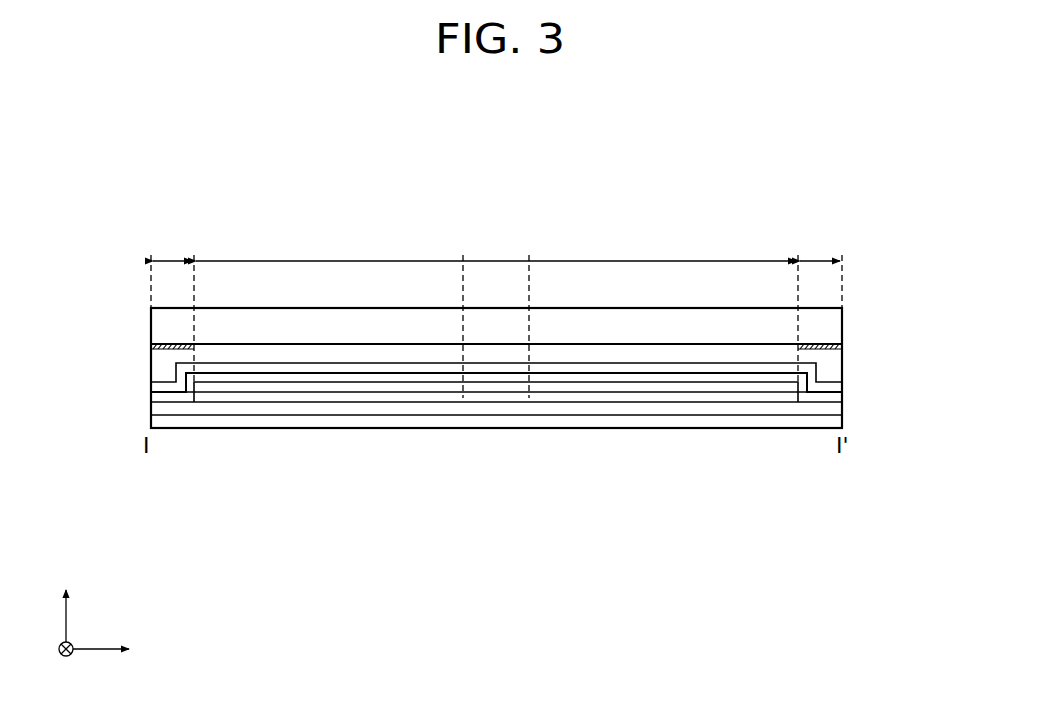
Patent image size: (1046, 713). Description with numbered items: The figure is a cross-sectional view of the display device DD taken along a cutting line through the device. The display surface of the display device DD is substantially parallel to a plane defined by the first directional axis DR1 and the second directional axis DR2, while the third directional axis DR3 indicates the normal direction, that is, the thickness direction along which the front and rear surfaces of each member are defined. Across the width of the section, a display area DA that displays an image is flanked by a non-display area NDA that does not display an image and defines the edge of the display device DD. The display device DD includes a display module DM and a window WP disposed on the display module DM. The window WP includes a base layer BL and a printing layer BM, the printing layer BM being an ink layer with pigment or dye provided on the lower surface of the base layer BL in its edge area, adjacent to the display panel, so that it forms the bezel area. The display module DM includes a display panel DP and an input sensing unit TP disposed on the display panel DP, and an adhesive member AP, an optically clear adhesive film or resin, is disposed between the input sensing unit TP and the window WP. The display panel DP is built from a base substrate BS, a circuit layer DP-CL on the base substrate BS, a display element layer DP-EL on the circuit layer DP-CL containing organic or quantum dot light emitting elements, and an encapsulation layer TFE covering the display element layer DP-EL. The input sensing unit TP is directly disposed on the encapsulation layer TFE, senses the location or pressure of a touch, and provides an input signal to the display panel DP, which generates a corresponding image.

The display device DD is at (821, 205).
The non-display area NDA is at (496, 246).
The display area DA is at (496, 246).
The window WP is at (442, 345).
The base layer BL is at (151, 325).
The printing layer BM is at (151, 348).
The adhesive member AP is at (833, 366).
The input sensing unit TP is at (833, 388).
The display module DM is at (555, 392).
The display panel DP is at (496, 461).
The base substrate BS is at (655, 504).
The circuit layer DP-CL is at (440, 400).
The display element layer DP-EL is at (549, 383).
The encapsulation layer TFE is at (632, 377).
The first directional axis DR1 is at (120, 650).
The second directional axis DR2 is at (65, 664).
The third directional axis DR3 is at (65, 601).